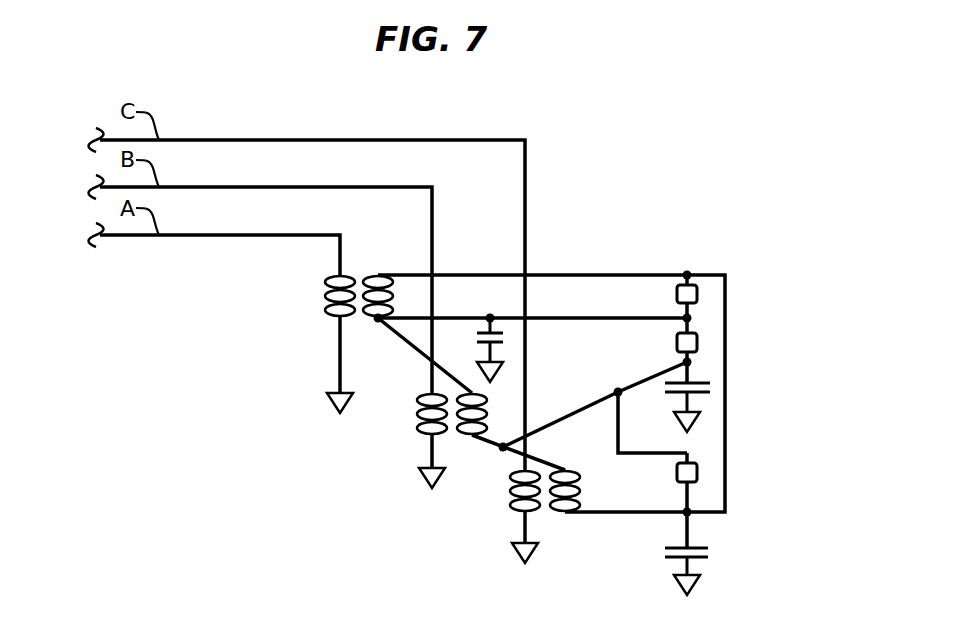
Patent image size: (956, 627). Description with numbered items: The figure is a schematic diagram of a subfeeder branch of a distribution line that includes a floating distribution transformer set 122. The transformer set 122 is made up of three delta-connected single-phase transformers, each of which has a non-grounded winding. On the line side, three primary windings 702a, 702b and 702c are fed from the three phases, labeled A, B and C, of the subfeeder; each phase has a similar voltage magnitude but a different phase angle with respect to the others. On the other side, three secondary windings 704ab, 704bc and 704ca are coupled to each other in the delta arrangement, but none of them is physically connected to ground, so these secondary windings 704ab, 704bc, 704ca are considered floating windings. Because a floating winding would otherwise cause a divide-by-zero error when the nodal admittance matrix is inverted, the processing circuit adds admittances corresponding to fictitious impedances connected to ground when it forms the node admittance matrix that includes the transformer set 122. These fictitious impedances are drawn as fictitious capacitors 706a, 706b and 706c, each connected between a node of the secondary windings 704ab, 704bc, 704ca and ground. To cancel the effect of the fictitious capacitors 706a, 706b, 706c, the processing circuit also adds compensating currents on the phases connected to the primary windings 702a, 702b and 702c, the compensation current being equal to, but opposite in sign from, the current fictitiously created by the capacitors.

The distribution transformer set 122 is at (618, 216).
The primary winding 702a is at (325, 298).
The primary winding 702b is at (418, 431).
The primary winding 702c is at (510, 505).
The secondary winding 704ca is at (393, 252).
The secondary winding 704ab is at (490, 408).
The secondary winding 704bc is at (575, 512).
The fictitious capacitor 706a is at (703, 392).
The fictitious capacitor 706b is at (703, 554).
The fictitious capacitor 706c is at (508, 340).